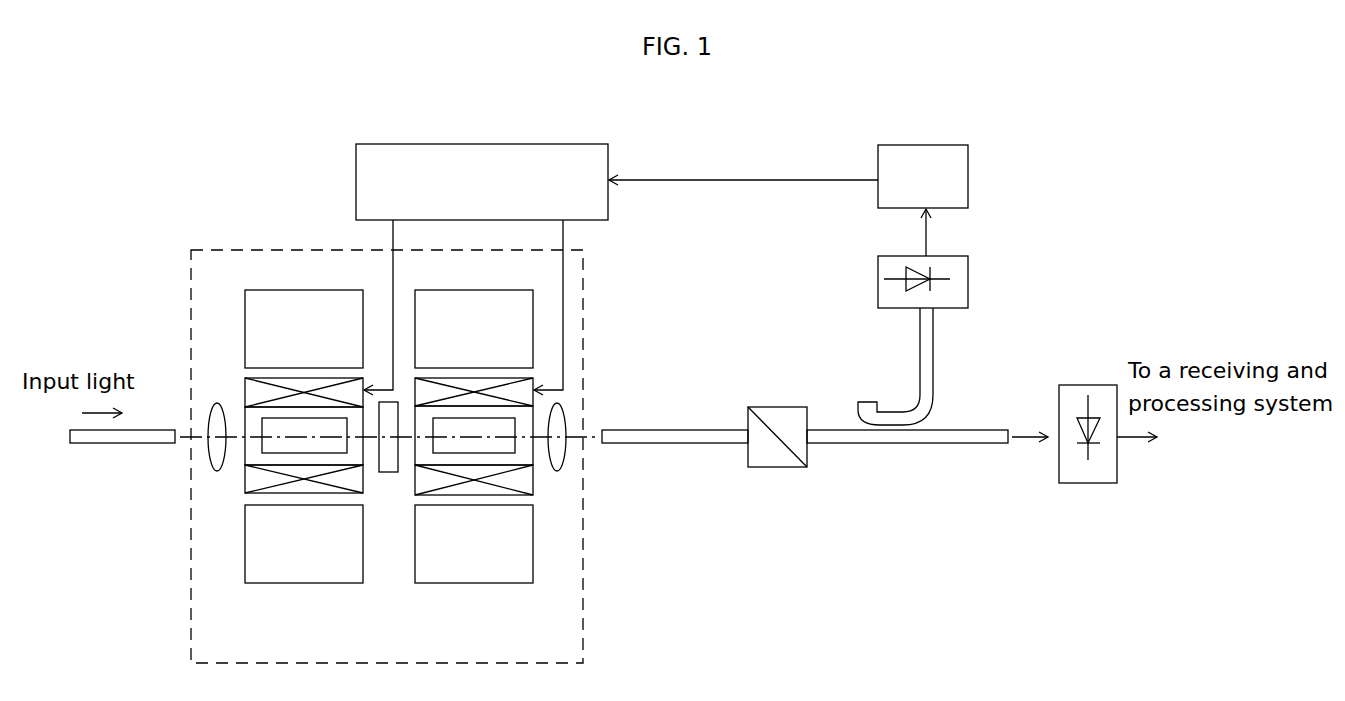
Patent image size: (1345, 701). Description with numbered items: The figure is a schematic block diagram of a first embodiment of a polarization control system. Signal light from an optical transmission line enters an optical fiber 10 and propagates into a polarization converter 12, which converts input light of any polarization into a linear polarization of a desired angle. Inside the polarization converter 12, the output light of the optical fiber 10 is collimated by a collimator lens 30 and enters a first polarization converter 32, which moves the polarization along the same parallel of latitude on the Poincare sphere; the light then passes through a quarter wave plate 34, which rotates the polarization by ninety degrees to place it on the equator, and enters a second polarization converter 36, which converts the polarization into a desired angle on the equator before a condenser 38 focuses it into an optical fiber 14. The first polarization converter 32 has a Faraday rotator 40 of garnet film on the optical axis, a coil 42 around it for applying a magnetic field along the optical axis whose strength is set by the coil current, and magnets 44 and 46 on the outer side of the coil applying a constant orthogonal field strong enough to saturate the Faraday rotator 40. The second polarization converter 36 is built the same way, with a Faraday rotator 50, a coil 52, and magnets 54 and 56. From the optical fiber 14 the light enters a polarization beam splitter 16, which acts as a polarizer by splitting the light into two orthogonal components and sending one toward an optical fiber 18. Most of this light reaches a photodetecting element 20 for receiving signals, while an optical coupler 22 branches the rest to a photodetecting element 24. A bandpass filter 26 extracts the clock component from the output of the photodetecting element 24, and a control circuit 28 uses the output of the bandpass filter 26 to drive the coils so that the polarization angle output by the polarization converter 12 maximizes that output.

The optical fiber 10 is at (125, 443).
The polarization converter 12 is at (203, 644).
The optical fiber 14 is at (674, 443).
The polarization beam splitter 16 is at (782, 467).
The optical fiber 18 is at (905, 443).
The photodetecting element 20 is at (1090, 385).
The optical coupler 22 is at (897, 407).
The photodetecting element 24 is at (880, 265).
The bandpass filter 26 is at (966, 178).
The control circuit 28 is at (356, 182).
The collimator lens 30 is at (212, 422).
The first polarization converter 32 is at (307, 590).
The quarter wave plate 34 is at (391, 473).
The second polarization converter 36 is at (474, 590).
The condenser 38 is at (560, 415).
The Faraday rotator 40 is at (267, 447).
The coil 42 is at (252, 393).
The magnet 44 is at (258, 307).
The magnet 46 is at (257, 555).
The Faraday rotator 50 is at (507, 446).
The coil 52 is at (524, 482).
The magnet 54 is at (512, 300).
The magnet 56 is at (518, 573).